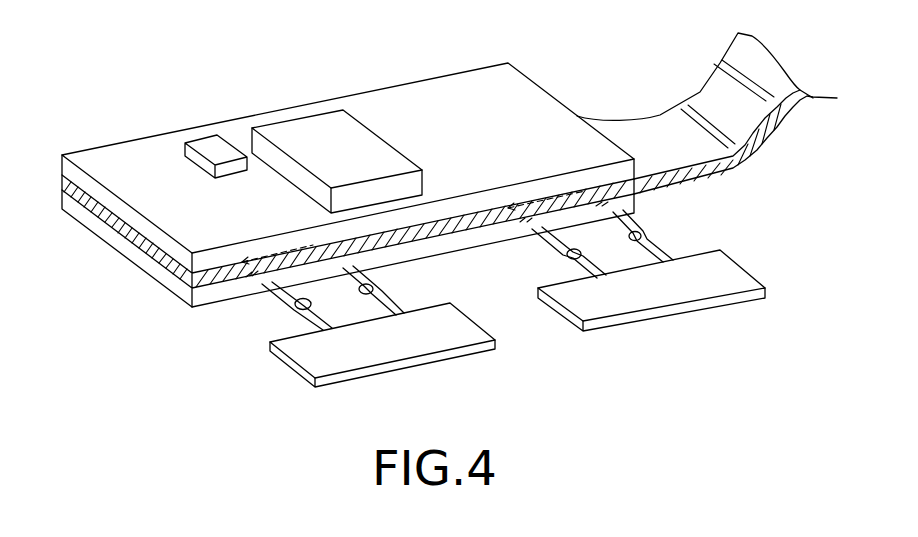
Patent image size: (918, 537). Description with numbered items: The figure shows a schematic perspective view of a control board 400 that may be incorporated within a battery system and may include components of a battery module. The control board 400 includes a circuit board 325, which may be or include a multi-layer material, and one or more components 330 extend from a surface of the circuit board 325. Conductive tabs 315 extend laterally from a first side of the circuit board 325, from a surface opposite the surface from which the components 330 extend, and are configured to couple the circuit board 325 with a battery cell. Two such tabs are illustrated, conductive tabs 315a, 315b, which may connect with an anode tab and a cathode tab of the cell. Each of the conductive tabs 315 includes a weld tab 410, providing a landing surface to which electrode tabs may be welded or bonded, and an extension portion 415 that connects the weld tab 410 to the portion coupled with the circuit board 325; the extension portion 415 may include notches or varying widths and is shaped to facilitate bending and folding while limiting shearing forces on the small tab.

The control board 400 is at (158, 72).
The circuit board 325 is at (112, 143).
The components 330 is at (293, 120).
The conductive tabs 315 is at (700, 92).
The extension portion 415 is at (273, 302).
The weld tab 410 is at (290, 362).
The conductive tab 315a is at (477, 348).
The conductive tab 315b is at (650, 313).